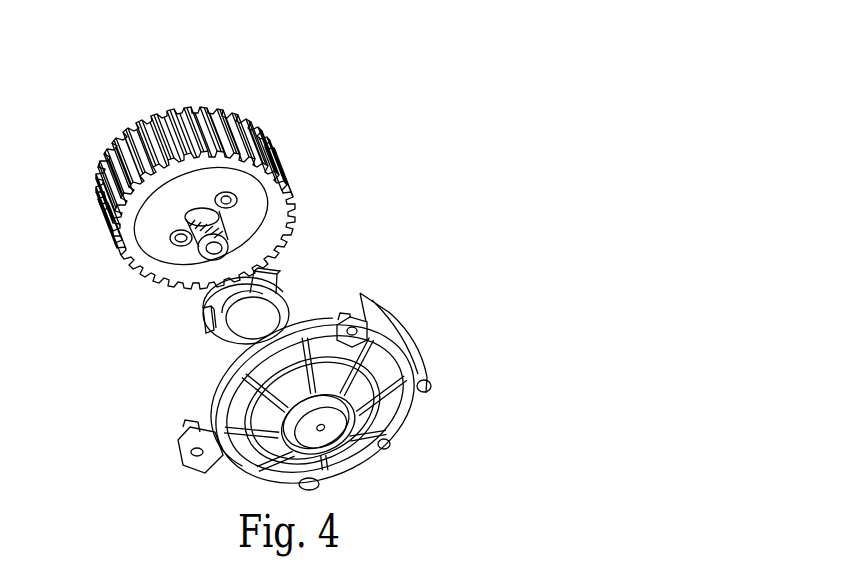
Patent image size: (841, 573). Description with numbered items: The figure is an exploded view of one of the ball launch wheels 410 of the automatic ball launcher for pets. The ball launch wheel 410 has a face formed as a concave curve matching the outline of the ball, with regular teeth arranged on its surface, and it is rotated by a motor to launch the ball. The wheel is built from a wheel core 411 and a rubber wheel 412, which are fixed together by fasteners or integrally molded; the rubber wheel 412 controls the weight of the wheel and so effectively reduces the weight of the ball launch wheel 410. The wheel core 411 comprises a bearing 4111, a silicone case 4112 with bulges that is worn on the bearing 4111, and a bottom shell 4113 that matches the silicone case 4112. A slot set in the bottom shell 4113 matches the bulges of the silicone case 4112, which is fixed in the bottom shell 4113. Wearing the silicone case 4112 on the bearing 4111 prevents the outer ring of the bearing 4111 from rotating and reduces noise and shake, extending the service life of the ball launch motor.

The ball launch wheel 410 is at (249, 55).
The rubber wheel 412 is at (263, 122).
The wheel core 411 is at (432, 141).
The bearing 4111 is at (222, 225).
The silicone case with bulges 4112 is at (290, 293).
The bottom shell 4113 is at (313, 343).